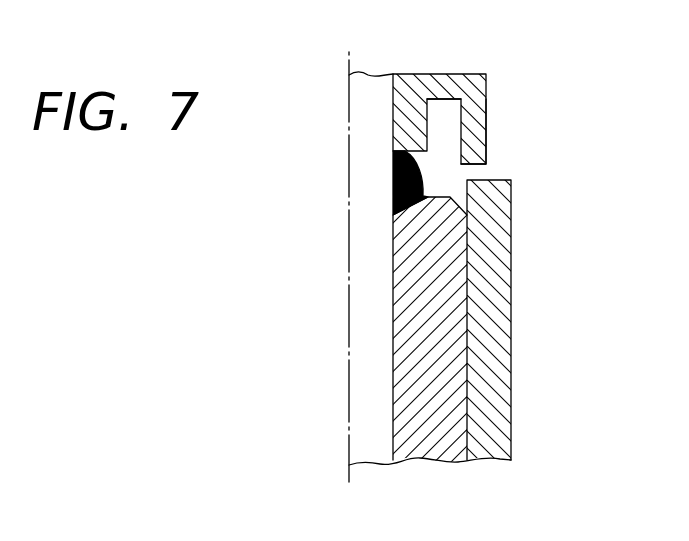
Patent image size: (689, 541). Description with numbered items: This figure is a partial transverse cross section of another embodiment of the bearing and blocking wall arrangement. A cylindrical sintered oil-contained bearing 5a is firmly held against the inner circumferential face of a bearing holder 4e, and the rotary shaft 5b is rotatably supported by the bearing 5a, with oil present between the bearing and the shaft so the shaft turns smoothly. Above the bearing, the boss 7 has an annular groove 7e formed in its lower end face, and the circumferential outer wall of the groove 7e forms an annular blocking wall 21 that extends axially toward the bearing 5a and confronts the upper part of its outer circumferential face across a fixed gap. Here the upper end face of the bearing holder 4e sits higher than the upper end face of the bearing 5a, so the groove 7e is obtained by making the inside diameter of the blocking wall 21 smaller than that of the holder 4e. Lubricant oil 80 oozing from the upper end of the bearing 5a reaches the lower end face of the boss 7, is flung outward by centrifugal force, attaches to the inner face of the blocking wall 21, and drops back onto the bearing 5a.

The boss 7 is at (474, 75).
The annular groove 7e is at (440, 106).
The blocking wall 21 is at (473, 158).
The lubricant oil 80 is at (394, 169).
The rotary shaft 5b is at (362, 300).
The sintered oil-contained bearing 5a is at (433, 442).
The bearing holder 4e is at (511, 303).